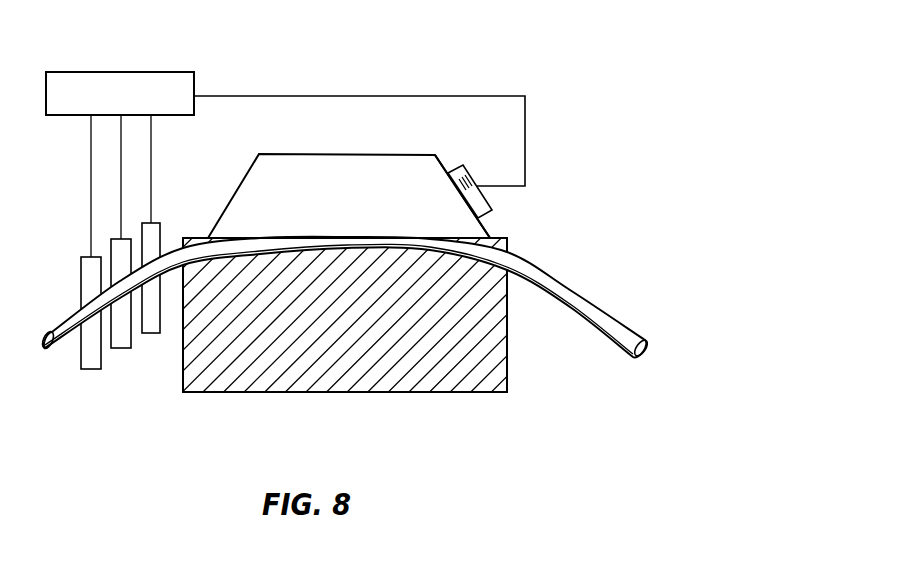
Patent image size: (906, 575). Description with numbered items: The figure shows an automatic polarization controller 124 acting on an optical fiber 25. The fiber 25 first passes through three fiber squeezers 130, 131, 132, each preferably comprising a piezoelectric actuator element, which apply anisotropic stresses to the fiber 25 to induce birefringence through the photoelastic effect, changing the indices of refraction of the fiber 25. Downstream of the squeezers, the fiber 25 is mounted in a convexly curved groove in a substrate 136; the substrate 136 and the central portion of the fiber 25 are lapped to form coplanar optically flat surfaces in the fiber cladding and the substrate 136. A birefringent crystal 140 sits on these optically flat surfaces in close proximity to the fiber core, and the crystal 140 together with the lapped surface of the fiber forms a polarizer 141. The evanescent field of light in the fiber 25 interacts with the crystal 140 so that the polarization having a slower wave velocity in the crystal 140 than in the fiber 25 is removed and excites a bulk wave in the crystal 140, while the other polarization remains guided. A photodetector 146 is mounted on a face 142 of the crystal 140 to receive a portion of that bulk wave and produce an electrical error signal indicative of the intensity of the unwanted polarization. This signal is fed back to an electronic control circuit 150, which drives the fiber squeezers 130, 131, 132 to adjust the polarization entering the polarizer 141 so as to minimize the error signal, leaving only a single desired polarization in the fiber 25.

The polarization controller 124 is at (526, 70).
The electronic control circuit 150 is at (106, 72).
The substrate 136 is at (360, 392).
The fiber squeezer 130 is at (86, 369).
The fiber squeezer 131 is at (121, 348).
The fiber squeezer 132 is at (161, 318).
The optical fiber 25 is at (71, 316).
The birefringent crystal 140 is at (243, 180).
The face of the crystal 142 is at (447, 163).
The photodetector 146 is at (473, 178).
The polarizer 141 is at (476, 419).